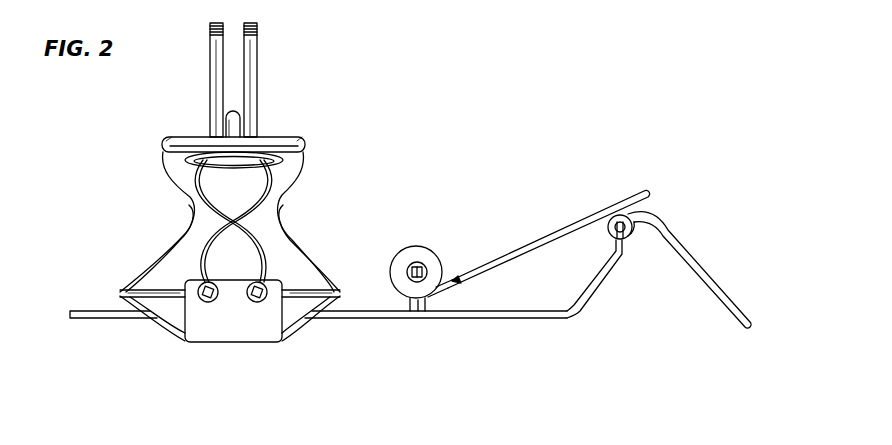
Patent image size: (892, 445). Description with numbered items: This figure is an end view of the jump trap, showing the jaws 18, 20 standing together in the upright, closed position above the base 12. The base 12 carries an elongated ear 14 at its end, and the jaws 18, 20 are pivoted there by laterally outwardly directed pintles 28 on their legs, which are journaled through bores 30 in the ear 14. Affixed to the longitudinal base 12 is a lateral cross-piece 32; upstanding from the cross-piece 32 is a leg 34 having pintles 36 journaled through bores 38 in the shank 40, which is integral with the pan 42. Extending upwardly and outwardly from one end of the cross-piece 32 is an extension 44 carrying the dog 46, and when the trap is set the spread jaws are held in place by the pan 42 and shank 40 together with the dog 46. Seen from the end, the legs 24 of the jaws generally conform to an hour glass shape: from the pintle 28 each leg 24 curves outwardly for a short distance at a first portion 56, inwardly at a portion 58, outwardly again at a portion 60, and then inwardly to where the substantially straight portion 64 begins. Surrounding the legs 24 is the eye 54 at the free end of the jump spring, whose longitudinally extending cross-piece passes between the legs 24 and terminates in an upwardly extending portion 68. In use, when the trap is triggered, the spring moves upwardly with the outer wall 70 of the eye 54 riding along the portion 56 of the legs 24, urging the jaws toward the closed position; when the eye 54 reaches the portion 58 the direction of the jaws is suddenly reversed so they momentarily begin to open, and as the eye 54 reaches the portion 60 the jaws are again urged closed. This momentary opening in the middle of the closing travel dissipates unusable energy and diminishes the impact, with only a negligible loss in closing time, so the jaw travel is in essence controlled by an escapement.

The base 12 is at (163, 303).
The first ear 14 is at (265, 327).
The jaw 18 is at (210, 58).
The jaw 20 is at (253, 55).
The legs 24 is at (212, 90).
The pintles 28 is at (197, 302).
The bores 30 is at (213, 302).
The cross-piece 32 is at (377, 320).
The leg 34 is at (425, 298).
The pintles 36 is at (425, 268).
The bores 38 is at (406, 270).
The shank 40 is at (445, 278).
The pan 42 is at (577, 223).
The extension 44 is at (622, 257).
The dog 46 is at (728, 295).
The eye 54 is at (290, 138).
The outwardly curved portion 56 is at (192, 252).
The inwardly curved portion 58 is at (218, 220).
The outwardly curved portion 60 is at (190, 188).
The straight portion 64 is at (212, 130).
The upwardly extending portion 68 is at (233, 110).
The outer wall 70 is at (277, 160).